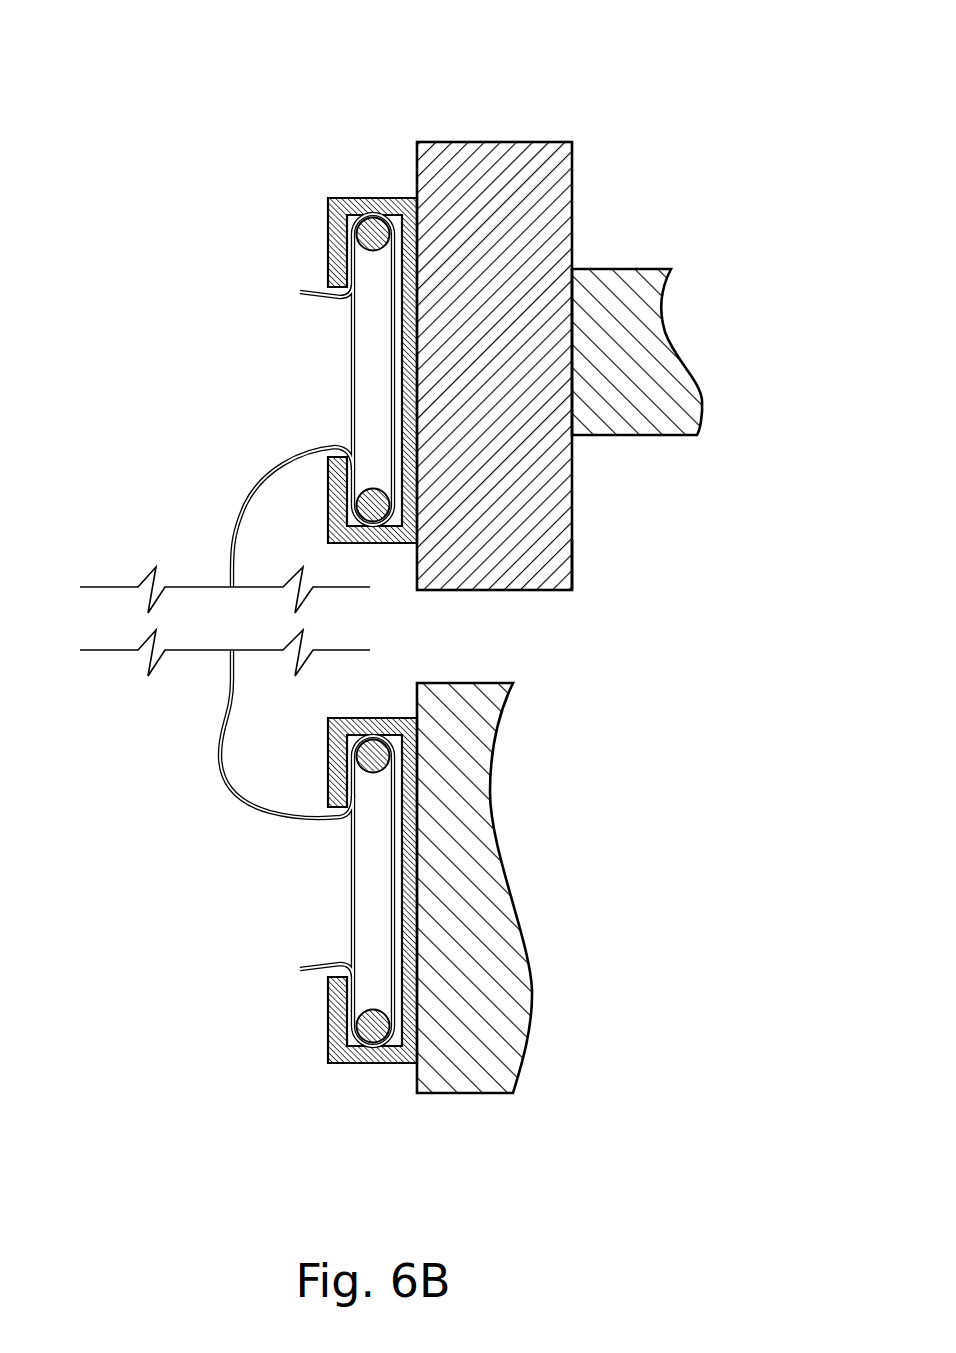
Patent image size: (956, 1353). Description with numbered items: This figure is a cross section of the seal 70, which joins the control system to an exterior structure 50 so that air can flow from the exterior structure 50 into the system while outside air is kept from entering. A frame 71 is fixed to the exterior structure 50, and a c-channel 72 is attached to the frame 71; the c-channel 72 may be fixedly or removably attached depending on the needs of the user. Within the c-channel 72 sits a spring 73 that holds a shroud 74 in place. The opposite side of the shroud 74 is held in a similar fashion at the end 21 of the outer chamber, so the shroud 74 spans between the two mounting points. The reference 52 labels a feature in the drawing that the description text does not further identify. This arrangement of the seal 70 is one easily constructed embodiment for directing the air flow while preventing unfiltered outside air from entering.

The seal 70 is at (655, 80).
The frame 71 is at (469, 142).
The c-channel 72 is at (328, 230).
The spring 73 is at (373, 250).
The shroud 74 is at (303, 292).
The exterior structure 50 is at (688, 370).
The housing wall 52 is at (572, 566).
The end of outer chamber 21 is at (508, 888).